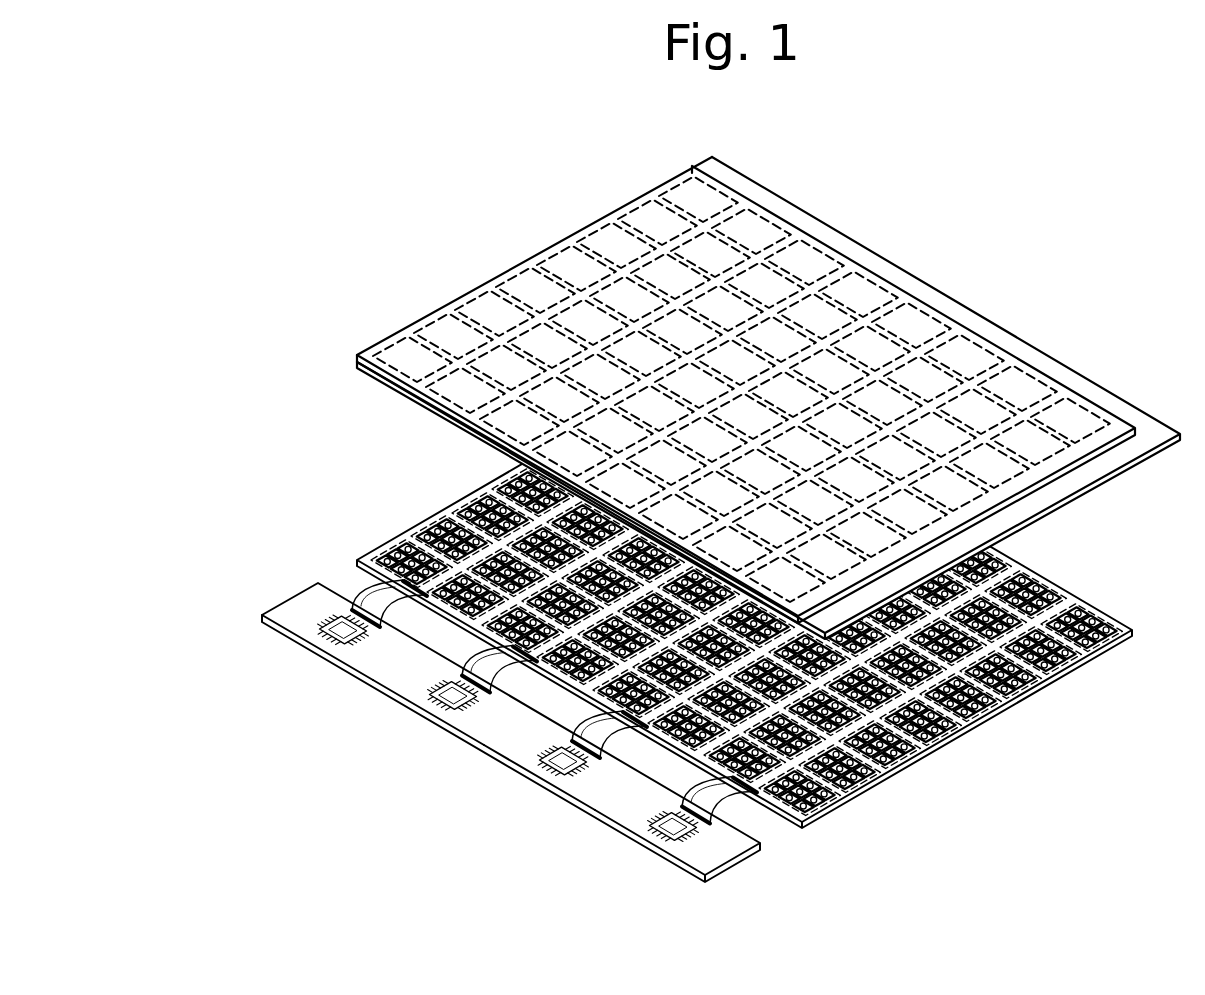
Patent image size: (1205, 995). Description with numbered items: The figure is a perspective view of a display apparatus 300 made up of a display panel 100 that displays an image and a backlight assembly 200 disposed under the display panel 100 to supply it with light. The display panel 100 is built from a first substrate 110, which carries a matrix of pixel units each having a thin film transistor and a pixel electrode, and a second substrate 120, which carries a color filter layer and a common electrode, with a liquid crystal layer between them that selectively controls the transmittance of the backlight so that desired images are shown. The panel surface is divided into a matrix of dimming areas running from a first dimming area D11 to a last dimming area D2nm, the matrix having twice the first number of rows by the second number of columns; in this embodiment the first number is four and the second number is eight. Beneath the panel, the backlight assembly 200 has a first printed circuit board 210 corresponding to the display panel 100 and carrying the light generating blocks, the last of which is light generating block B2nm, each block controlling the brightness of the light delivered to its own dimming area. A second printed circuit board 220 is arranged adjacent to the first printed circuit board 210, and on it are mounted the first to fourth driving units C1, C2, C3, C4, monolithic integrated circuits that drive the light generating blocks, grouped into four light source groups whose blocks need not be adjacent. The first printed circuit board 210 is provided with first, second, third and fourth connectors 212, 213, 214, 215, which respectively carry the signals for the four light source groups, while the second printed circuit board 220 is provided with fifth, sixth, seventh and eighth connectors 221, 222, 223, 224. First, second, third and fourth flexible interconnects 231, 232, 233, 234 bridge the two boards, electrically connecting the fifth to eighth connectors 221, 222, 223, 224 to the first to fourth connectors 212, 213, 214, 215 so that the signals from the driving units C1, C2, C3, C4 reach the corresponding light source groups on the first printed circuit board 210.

The display apparatus 300 is at (997, 141).
The display panel 100 is at (1166, 307).
The first substrate 110 is at (1133, 415).
The second substrate 120 is at (1066, 390).
The dimming area D11 is at (692, 193).
The dimming area D2nm is at (807, 580).
The backlight assembly 200 is at (1126, 612).
The first printed circuit board 210 is at (992, 716).
The light generating block B2nm is at (818, 796).
The first connector 212 is at (418, 598).
The second connector 213 is at (526, 663).
The third connector 214 is at (636, 728).
The fourth connector 215 is at (760, 808).
The second printed circuit board 220 is at (722, 855).
The fifth connector 221 is at (315, 602).
The sixth connector 222 is at (422, 685).
The seventh connector 223 is at (532, 752).
The eighth connector 224 is at (642, 816).
The first driving unit C1 is at (322, 630).
The second driving unit C2 is at (432, 697).
The third driving unit C3 is at (542, 763).
The fourth driving unit C4 is at (653, 828).
The first flexible interconnect 231 is at (370, 590).
The second flexible interconnect 232 is at (482, 672).
The third flexible interconnect 233 is at (593, 737).
The fourth flexible interconnect 234 is at (704, 803).